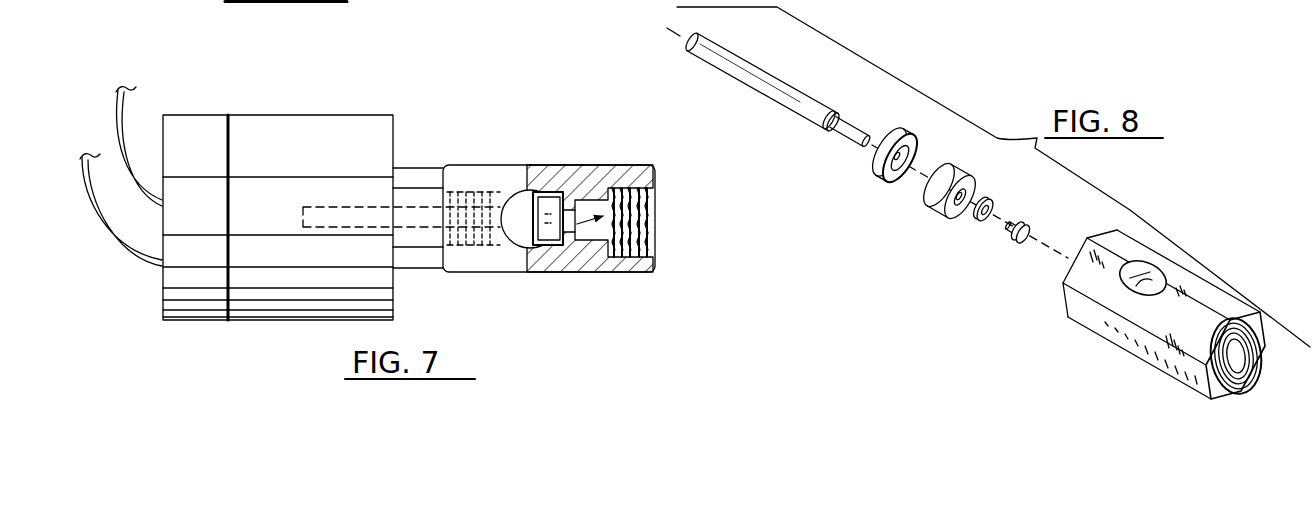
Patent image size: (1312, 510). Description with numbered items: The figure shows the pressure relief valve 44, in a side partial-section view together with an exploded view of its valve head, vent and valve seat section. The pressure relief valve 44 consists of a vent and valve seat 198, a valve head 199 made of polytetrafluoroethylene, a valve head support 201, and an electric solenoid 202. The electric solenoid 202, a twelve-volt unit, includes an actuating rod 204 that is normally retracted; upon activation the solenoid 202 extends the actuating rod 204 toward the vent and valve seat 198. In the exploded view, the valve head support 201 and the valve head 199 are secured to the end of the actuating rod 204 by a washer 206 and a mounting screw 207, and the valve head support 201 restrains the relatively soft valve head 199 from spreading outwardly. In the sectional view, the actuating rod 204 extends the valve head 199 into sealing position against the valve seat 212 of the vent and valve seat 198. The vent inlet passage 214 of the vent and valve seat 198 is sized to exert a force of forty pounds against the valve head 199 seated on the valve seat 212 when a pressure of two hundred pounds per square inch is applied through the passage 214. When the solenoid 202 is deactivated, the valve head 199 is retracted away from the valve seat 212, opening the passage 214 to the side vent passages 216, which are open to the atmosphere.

In FIG. 7, the pressure relief valve 44 is at (422, 292).
In FIG. 7, the vent and valve seat 198 is at (543, 162).
In FIG. 8, the vent and valve seat 198 is at (1123, 348).
In FIG. 7, the valve head 199 is at (540, 252).
In FIG. 8, the valve head 199 is at (927, 200).
In FIG. 8, the valve head support 201 is at (870, 167).
In FIG. 7, the electric solenoid 202 is at (355, 115).
In FIG. 7, the actuating rod 204 is at (517, 248).
In FIG. 8, the actuating rod 204 is at (706, 64).
In FIG. 8, the washer 206 is at (977, 218).
In FIG. 8, the mounting screw 207 is at (1015, 243).
In FIG. 7, the valve seat 212 is at (573, 243).
In FIG. 7, the vent inlet passage 214 is at (653, 206).
In FIG. 7, the side vent passages 216 is at (520, 203).
In FIG. 8, the side vent passages 216 is at (1125, 277).